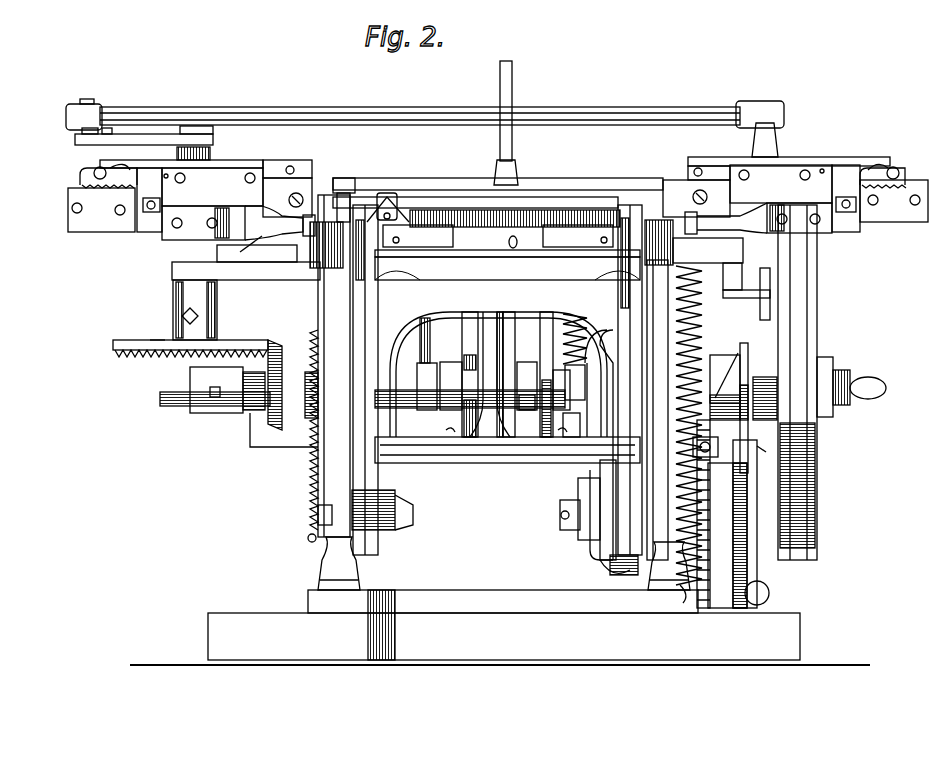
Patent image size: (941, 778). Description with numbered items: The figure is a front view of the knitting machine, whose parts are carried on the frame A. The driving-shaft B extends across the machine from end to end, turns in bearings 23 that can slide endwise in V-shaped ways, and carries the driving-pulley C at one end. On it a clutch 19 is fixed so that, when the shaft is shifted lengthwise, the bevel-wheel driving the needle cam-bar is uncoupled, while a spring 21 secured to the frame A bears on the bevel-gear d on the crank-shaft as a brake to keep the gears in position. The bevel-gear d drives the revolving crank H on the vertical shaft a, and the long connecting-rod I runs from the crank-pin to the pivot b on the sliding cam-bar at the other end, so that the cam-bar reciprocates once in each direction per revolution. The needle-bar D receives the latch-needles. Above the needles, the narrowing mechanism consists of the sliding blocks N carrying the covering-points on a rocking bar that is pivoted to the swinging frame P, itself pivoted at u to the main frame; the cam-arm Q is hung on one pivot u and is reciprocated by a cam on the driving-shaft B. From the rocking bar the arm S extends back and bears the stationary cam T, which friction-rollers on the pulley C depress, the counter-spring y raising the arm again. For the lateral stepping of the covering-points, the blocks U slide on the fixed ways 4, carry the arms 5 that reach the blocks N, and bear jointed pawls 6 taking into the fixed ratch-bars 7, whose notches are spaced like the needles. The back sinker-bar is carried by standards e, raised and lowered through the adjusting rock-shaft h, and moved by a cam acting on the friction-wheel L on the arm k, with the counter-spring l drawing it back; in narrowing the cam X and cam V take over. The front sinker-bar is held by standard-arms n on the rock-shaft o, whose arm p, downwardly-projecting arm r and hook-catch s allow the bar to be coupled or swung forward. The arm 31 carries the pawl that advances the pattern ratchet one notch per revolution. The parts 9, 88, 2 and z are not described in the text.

The connecting-rod I is at (425, 123).
The revolving crank H is at (144, 137).
The vertical shaft a is at (197, 241).
The pivot b is at (765, 140).
The plate 9 is at (495, 163).
The blocks or carriages U is at (497, 202).
The fixed ways 4 is at (496, 197).
The jointed pawls 6 is at (499, 193).
The toothed cap 88 is at (493, 176).
The fixed ratch-bars 7 is at (498, 206).
The arms 5 is at (506, 221).
The bushing 2 is at (450, 239).
The counter-spring l is at (388, 207).
The sliding blocks N is at (507, 233).
The frame A is at (500, 430).
The bevel-gear d is at (190, 339).
The bearings 23 is at (156, 333).
The standards e is at (283, 385).
The driving-shaft B is at (365, 408).
The clutch 19 is at (216, 390).
The spring 21 is at (307, 395).
The swinging frame P is at (497, 380).
The rock-shaft o is at (507, 450).
The friction-wheel L is at (488, 374).
The adjusting rock-shaft h is at (477, 374).
The arm k is at (506, 374).
The cam X is at (522, 382).
The cam V is at (563, 374).
The standard-arms n is at (599, 445).
The hook-catch s is at (506, 427).
The pivots u is at (321, 436).
The cam-arm Q is at (382, 498).
The arm p is at (599, 526).
The downwardly-projecting arm r is at (601, 516).
The arm S is at (708, 250).
The counter-spring y is at (694, 434).
The stationary cam T is at (746, 291).
The block z is at (743, 408).
The driving-pulley C is at (832, 382).
The needle-bar D is at (731, 514).
The arm 31 is at (764, 451).